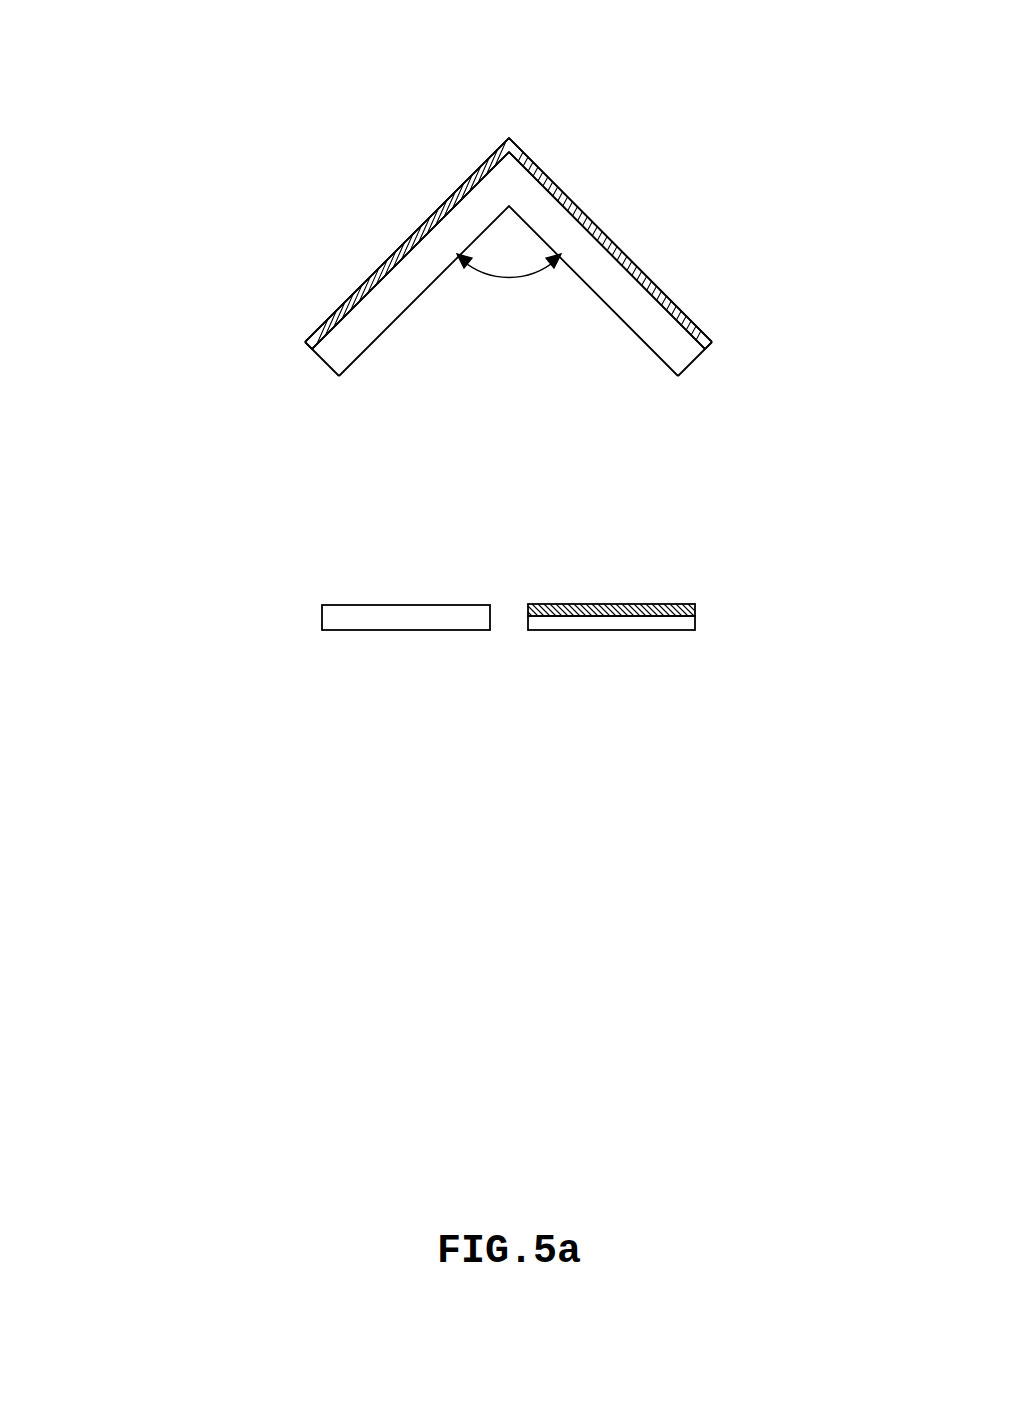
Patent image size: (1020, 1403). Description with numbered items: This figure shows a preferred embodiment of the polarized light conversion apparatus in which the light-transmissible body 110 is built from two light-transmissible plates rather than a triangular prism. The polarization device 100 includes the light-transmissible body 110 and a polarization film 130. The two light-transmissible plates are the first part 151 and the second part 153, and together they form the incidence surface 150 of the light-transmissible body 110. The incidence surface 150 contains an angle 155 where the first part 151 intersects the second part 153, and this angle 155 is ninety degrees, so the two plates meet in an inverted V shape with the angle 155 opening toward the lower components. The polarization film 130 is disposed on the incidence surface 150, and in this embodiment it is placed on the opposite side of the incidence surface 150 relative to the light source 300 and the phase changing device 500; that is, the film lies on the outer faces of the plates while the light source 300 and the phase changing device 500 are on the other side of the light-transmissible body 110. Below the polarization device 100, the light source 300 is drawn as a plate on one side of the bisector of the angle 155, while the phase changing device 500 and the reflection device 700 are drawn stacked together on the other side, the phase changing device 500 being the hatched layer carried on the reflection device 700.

The polarization device 100 is at (176, 185).
The light-transmissible body 110 is at (347, 343).
The polarization film 130 is at (372, 275).
The incidence surface 150 is at (410, 62).
The first part 151 is at (462, 192).
The second part 153 is at (557, 185).
The angle 155 is at (509, 278).
The light source 300 is at (415, 613).
The phase changing device 500 is at (562, 610).
The reflection device 700 is at (558, 627).